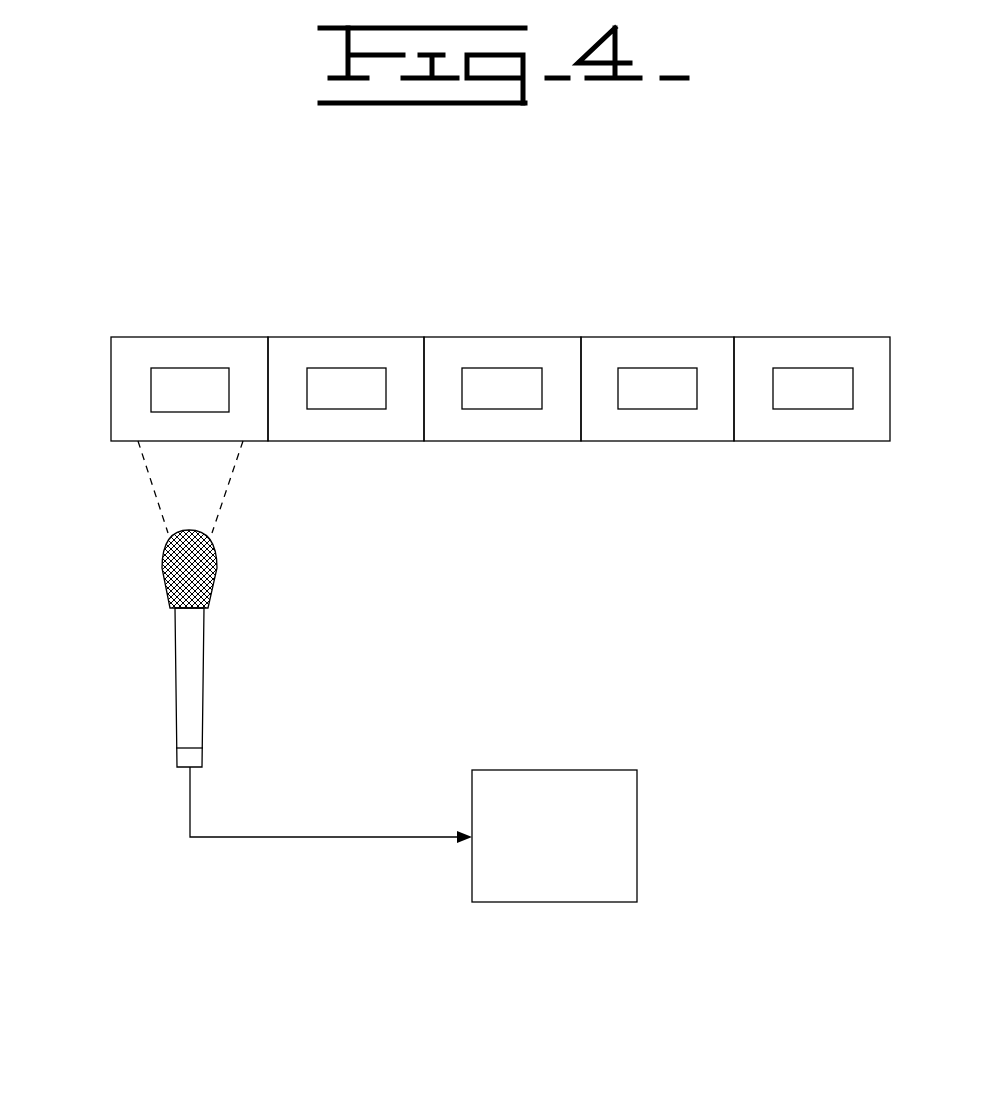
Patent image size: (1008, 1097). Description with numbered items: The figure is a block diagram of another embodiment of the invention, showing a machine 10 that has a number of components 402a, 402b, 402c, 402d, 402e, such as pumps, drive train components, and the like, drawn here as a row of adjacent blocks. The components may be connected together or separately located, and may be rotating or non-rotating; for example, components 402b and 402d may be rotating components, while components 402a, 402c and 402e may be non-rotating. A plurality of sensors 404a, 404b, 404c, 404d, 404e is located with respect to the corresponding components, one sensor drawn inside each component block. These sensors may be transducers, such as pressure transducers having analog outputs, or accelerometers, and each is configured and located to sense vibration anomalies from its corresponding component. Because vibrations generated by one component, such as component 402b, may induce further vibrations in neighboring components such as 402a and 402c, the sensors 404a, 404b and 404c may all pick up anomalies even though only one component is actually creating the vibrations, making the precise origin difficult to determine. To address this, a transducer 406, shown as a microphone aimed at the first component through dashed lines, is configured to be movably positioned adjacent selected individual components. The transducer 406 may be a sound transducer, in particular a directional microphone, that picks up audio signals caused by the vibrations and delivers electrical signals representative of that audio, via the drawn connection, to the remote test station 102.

The machine 10 is at (186, 279).
The component 402a is at (112, 354).
The component 402b is at (308, 337).
The component 402c is at (498, 337).
The component 402d is at (630, 337).
The component 402e is at (810, 337).
The sensor 404a is at (149, 388).
The sensor 404b is at (360, 409).
The sensor 404c is at (507, 409).
The sensor 404d is at (660, 409).
The sensor 404e is at (792, 409).
The transducer 406 is at (205, 697).
The remote test station 102 is at (578, 851).